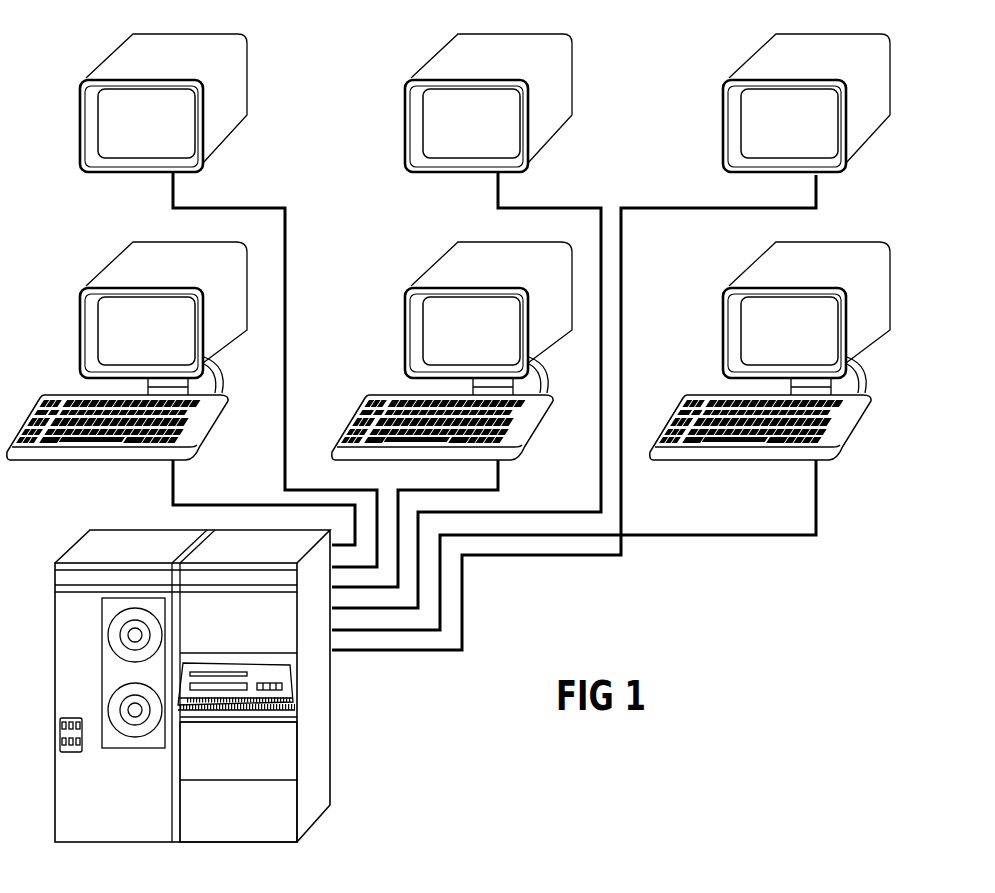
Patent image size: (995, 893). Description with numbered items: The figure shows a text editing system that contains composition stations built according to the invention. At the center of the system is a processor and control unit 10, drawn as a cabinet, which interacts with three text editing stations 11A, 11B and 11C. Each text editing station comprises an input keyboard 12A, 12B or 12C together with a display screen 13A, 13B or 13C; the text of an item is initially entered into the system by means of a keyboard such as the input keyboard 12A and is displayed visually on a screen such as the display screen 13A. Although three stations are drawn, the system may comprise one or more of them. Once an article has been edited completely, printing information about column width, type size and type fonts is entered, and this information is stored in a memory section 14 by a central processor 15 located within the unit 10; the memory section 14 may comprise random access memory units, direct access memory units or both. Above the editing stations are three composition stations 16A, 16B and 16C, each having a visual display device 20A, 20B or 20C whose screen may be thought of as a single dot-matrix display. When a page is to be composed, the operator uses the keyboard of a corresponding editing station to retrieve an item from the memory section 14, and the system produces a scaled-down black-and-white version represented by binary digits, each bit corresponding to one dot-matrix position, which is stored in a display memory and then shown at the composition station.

The processor and control unit 10 is at (192, 700).
The text editing station 11A is at (81, 311).
The text editing station 11B is at (458, 318).
The text editing station 11C is at (781, 318).
The input keyboard 12A is at (51, 456).
The input keyboard 12B is at (442, 443).
The input keyboard 12C is at (767, 445).
The display screen 13A is at (167, 338).
The display screen 13B is at (471, 331).
The display screen 13C is at (789, 331).
The memory section 14 is at (273, 753).
The central processor 15 is at (277, 675).
The composition station 16A is at (171, 29).
The composition station 16B is at (488, 89).
The composition station 16C is at (806, 89).
The visual display device 20A is at (107, 115).
The visual display device 20B is at (432, 123).
The visual display device 20C is at (750, 123).